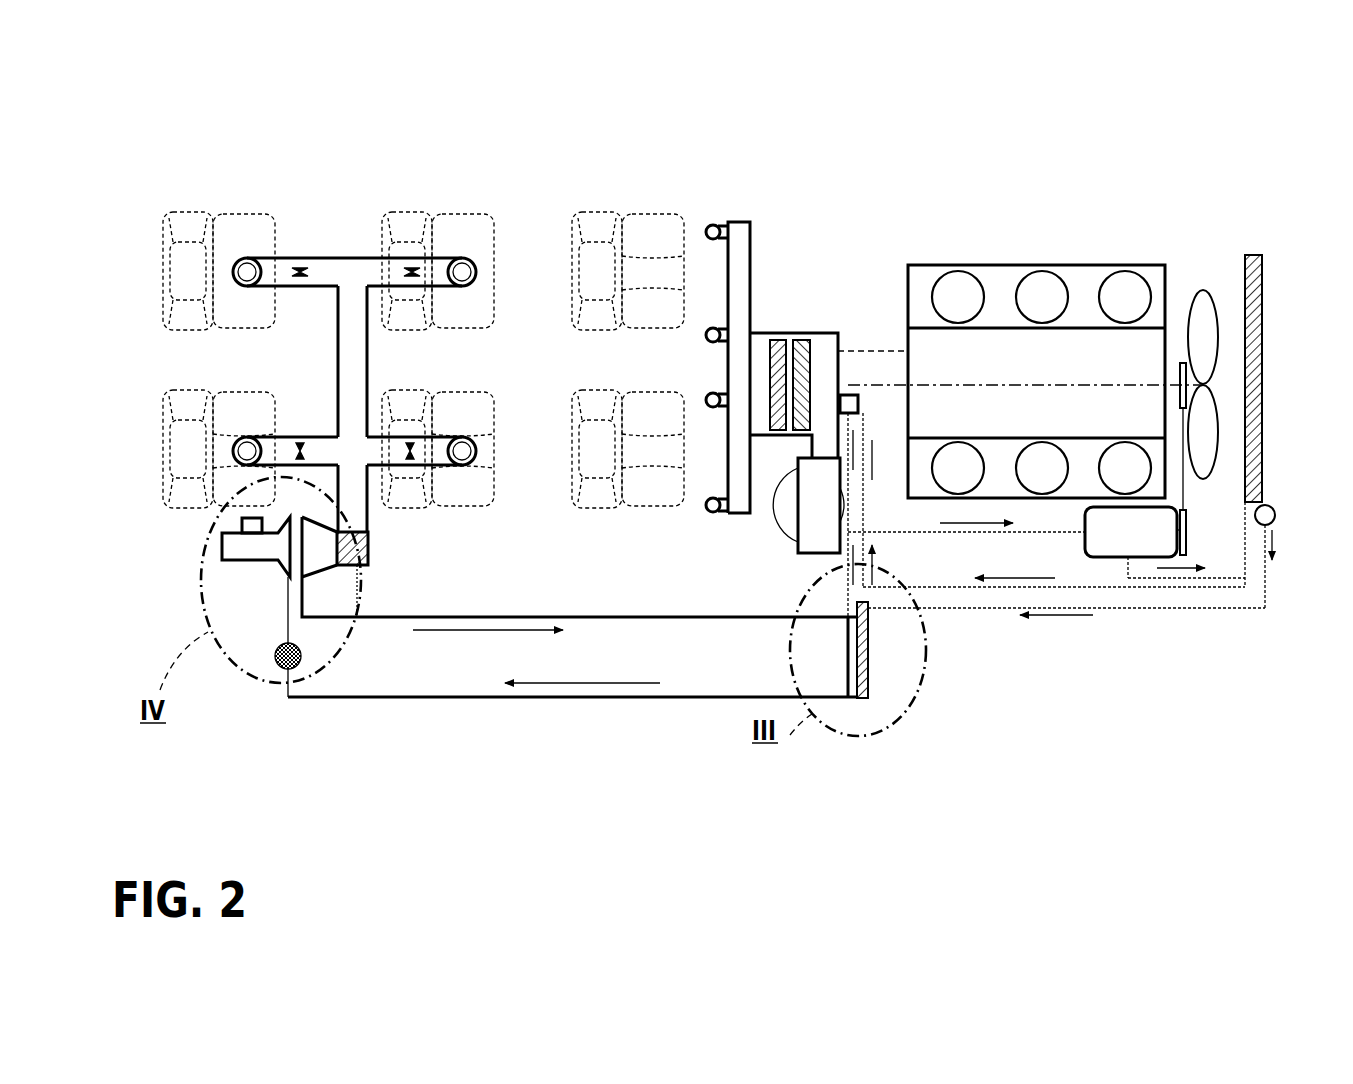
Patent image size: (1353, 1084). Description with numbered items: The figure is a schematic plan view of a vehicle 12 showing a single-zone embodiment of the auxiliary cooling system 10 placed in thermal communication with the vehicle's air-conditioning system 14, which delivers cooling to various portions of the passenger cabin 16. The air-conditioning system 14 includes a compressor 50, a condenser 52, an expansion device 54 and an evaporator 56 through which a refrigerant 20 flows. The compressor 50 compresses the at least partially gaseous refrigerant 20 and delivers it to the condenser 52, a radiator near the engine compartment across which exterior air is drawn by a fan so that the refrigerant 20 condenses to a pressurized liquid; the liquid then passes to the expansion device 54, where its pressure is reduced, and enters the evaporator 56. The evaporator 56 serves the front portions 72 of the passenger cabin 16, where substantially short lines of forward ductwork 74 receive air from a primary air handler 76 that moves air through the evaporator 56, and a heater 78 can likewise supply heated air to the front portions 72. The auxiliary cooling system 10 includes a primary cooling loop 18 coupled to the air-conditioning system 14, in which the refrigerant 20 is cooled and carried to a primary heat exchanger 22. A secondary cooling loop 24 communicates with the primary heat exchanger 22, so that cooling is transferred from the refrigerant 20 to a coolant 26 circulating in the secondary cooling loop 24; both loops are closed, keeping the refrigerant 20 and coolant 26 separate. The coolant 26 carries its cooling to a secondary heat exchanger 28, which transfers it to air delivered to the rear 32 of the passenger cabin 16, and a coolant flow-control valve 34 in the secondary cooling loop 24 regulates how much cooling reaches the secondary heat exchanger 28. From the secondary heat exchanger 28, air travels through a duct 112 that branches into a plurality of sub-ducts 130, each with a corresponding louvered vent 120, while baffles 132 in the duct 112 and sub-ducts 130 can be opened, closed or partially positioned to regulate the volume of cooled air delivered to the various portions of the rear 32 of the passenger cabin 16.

The auxiliary cooling system 10 is at (413, 160).
The vehicle 12 is at (1182, 207).
The air-conditioning system 14 is at (819, 305).
The passenger cabin 16 is at (235, 205).
The primary cooling loop 18 is at (848, 560).
The refrigerant 20 is at (870, 490).
The primary heat exchanger 22 is at (870, 677).
The secondary cooling loop 24 is at (403, 698).
The coolant 26 is at (330, 700).
The secondary heat exchanger 28 is at (266, 570).
The rear of the passenger cabin 32 is at (295, 365).
The coolant flow-control valve 34 is at (272, 660).
The compressor 50 is at (1115, 557).
The condenser 52 is at (1255, 300).
The expansion device 54 is at (848, 393).
The evaporator 56 is at (800, 333).
The front portions of the passenger cabin 72 is at (625, 195).
The forward ductwork 74 is at (730, 222).
The primary air handler 76 is at (772, 530).
The heater 78 is at (775, 333).
The duct 112 is at (353, 367).
The louvered vent 120 is at (462, 272).
The sub-duct 130 is at (278, 270).
The baffle 132 is at (412, 458).